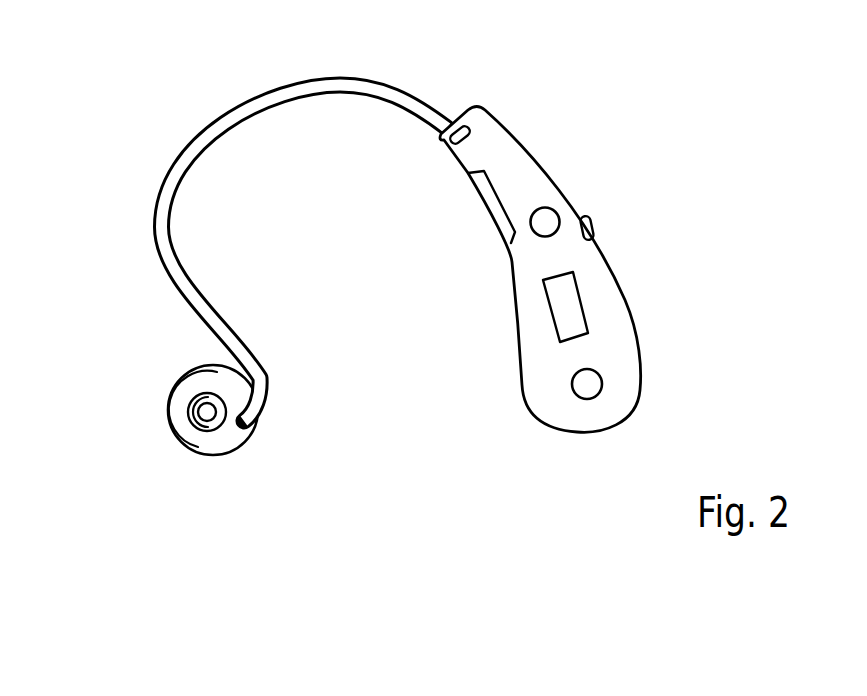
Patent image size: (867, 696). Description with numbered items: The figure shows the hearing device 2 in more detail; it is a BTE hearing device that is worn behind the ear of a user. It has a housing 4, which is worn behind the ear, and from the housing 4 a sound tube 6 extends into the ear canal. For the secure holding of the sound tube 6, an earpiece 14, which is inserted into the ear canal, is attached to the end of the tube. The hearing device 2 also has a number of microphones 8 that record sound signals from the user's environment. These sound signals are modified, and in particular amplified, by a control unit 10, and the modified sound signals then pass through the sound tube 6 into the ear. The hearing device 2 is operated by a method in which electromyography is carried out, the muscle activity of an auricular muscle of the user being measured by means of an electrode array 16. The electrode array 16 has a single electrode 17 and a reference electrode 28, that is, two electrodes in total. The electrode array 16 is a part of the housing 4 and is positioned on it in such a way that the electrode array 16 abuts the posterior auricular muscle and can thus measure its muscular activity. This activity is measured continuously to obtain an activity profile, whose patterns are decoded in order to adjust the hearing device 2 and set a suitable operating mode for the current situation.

The hearing device 2 is at (98, 119).
The housing 4 is at (637, 335).
The sound tube 6 is at (273, 85).
The microphones 8 is at (480, 110).
The control unit 10 is at (580, 295).
The earpiece 14 is at (180, 373).
The electrode array 16 is at (603, 326).
The electrode 17 is at (588, 399).
The reference electrode 28 is at (559, 216).